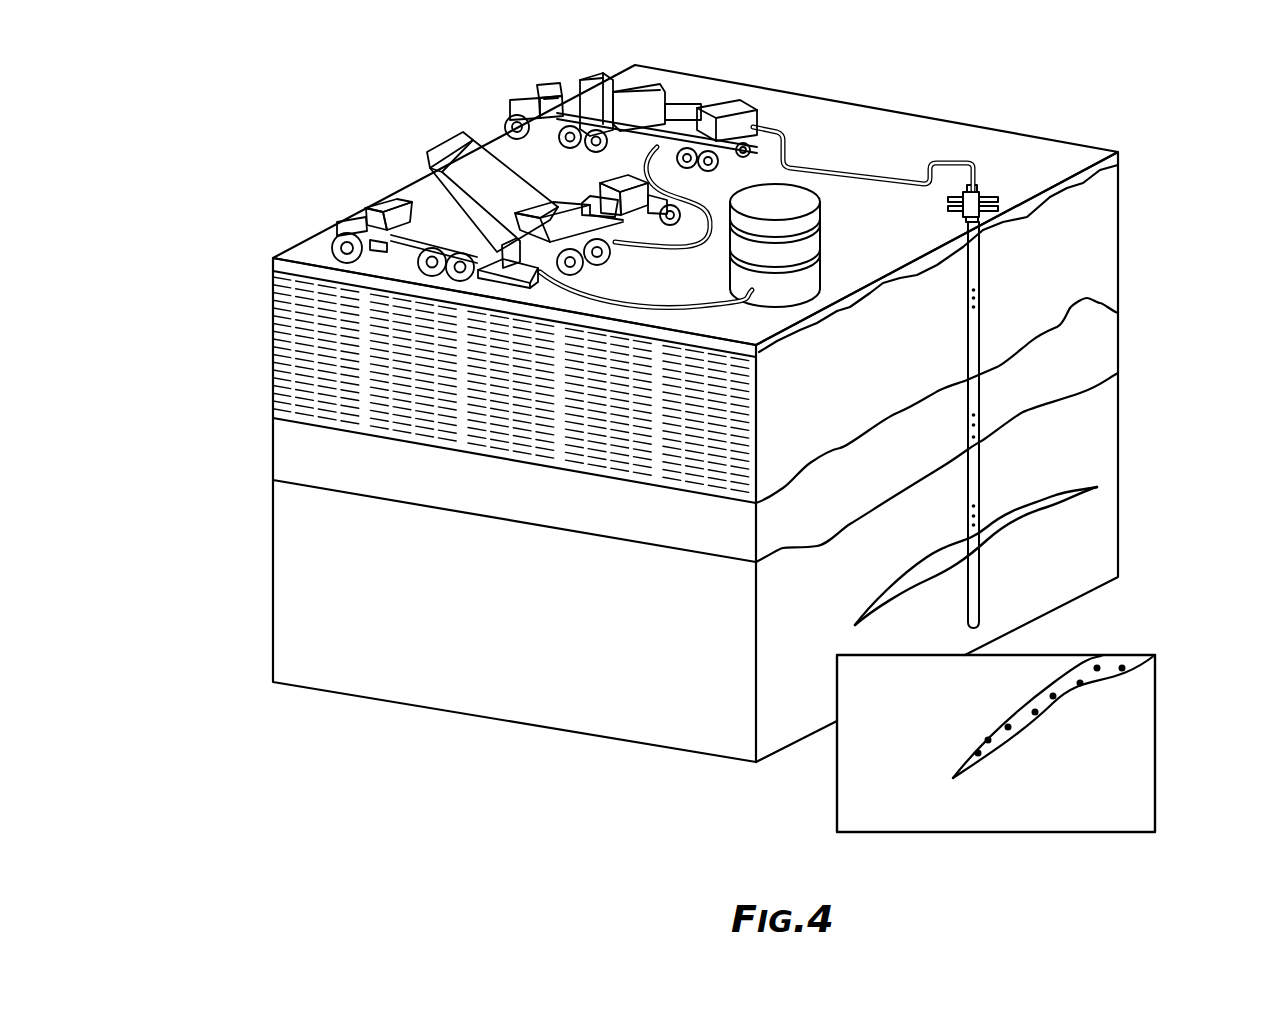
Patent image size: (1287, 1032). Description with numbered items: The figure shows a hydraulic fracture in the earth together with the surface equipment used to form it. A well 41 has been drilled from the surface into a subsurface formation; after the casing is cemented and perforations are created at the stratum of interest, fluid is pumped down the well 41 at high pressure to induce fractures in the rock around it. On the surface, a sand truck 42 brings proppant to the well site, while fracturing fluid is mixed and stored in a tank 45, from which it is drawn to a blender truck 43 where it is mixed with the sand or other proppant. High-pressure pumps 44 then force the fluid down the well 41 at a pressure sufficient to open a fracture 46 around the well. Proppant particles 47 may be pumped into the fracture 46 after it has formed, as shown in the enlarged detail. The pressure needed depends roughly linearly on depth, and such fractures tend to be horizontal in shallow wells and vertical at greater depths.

The well 41 is at (985, 393).
The sand truck 42 is at (340, 210).
The blender truck 43 is at (540, 186).
The high-pressure pumps 44 is at (708, 116).
The tank 45 is at (804, 178).
The fracture 46 is at (1040, 507).
The proppant particles 47 is at (1028, 725).